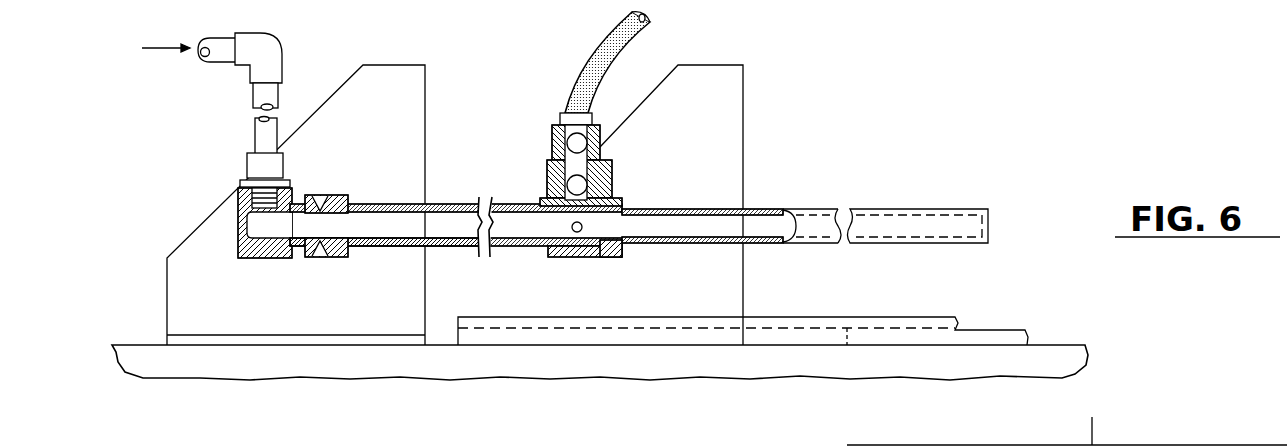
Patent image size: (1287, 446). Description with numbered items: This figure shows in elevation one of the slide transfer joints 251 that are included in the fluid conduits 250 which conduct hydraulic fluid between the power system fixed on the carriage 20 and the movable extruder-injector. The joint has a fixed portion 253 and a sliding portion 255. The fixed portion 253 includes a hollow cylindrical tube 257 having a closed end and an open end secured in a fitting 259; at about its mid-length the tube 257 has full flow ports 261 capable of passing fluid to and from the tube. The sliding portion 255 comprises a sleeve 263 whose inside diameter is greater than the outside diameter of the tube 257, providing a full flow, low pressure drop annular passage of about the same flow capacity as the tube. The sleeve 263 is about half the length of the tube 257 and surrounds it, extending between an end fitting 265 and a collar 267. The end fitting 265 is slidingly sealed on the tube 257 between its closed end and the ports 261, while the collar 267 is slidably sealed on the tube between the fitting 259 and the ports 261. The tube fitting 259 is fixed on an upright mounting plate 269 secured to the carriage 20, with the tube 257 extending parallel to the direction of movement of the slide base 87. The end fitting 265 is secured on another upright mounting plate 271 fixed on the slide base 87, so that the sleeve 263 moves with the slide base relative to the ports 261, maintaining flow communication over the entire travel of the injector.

The carriage 20 is at (1062, 345).
The slide base 87 is at (1003, 330).
The fluid conduit 250 is at (228, 142).
The slide transfer joint 251 is at (466, 180).
The fixed portion 253 is at (798, 210).
The sliding portion 255 is at (508, 204).
The hollow cylindrical tube 257 is at (922, 222).
The fitting 259 is at (240, 202).
The full flow port 261 is at (583, 226).
The sleeve 263 is at (465, 248).
The end fitting 265 is at (607, 167).
The collar 267 is at (332, 196).
The upright mounting plate 269 is at (335, 93).
The upright mounting plate 271 is at (728, 88).